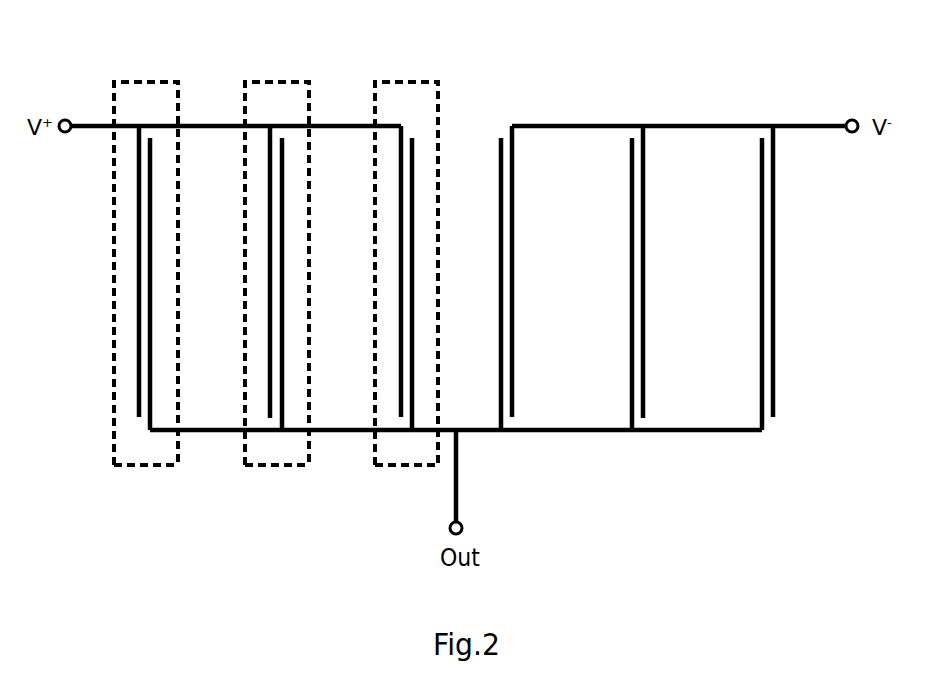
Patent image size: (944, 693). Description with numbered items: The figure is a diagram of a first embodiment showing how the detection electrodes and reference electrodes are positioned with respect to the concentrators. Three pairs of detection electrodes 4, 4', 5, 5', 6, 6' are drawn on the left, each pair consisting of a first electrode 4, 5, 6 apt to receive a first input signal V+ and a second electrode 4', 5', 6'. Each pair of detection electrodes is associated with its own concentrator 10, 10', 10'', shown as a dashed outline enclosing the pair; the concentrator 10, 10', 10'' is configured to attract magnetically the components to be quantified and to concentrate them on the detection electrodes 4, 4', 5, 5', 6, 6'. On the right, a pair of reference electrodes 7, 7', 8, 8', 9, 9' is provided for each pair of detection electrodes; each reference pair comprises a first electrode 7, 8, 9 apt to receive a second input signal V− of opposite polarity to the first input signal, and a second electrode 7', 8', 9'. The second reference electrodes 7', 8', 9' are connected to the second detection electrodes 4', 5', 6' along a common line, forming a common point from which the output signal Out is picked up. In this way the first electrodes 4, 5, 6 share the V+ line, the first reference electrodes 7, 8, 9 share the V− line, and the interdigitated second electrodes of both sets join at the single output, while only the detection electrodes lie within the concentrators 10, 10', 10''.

The first detection electrode 4 is at (105, 271).
The second detection electrode 4' is at (185, 284).
The first detection electrode 5 is at (242, 272).
The second detection electrode 5' is at (319, 284).
The first detection electrode 6 is at (370, 271).
The second detection electrode 6' is at (446, 284).
The first reference electrode 7 is at (535, 271).
The second reference electrode 7' is at (485, 284).
The first reference electrode 8 is at (674, 272).
The second reference electrode 8' is at (609, 284).
The first reference electrode 9 is at (810, 271).
The second reference electrode 9' is at (733, 284).
The concentrator 10 is at (146, 248).
The concentrator 10' is at (277, 248).
The concentrator 10'' is at (406, 248).